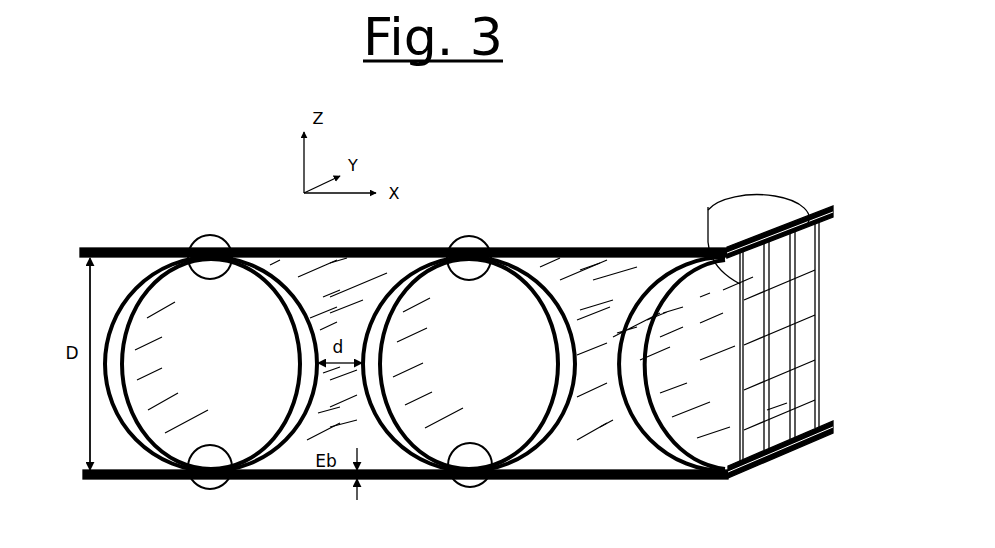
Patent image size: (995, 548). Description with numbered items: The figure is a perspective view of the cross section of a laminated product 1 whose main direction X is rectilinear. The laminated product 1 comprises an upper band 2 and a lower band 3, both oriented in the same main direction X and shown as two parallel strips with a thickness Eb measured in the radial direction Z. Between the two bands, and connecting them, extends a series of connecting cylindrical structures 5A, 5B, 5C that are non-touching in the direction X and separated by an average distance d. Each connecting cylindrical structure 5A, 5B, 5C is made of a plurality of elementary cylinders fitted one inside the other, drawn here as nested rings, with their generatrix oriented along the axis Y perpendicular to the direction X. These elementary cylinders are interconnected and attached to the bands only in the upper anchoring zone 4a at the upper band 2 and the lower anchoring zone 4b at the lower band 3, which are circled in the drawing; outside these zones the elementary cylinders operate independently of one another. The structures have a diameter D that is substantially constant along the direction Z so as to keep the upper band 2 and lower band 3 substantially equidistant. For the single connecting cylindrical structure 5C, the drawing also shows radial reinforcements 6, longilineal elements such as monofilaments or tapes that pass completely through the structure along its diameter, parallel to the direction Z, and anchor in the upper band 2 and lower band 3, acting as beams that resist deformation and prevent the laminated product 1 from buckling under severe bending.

The laminated product 1 is at (550, 211).
The upper band 2 is at (108, 248).
The lower band 3 is at (118, 479).
The upper anchoring zone 4a is at (223, 281).
The lower anchoring zone 4b is at (226, 443).
The connecting cylindrical structure 5A is at (138, 458).
The connecting cylindrical structure 5B is at (552, 450).
The connecting cylindrical structure 5C is at (652, 452).
The radial reinforcement 6 is at (745, 234).